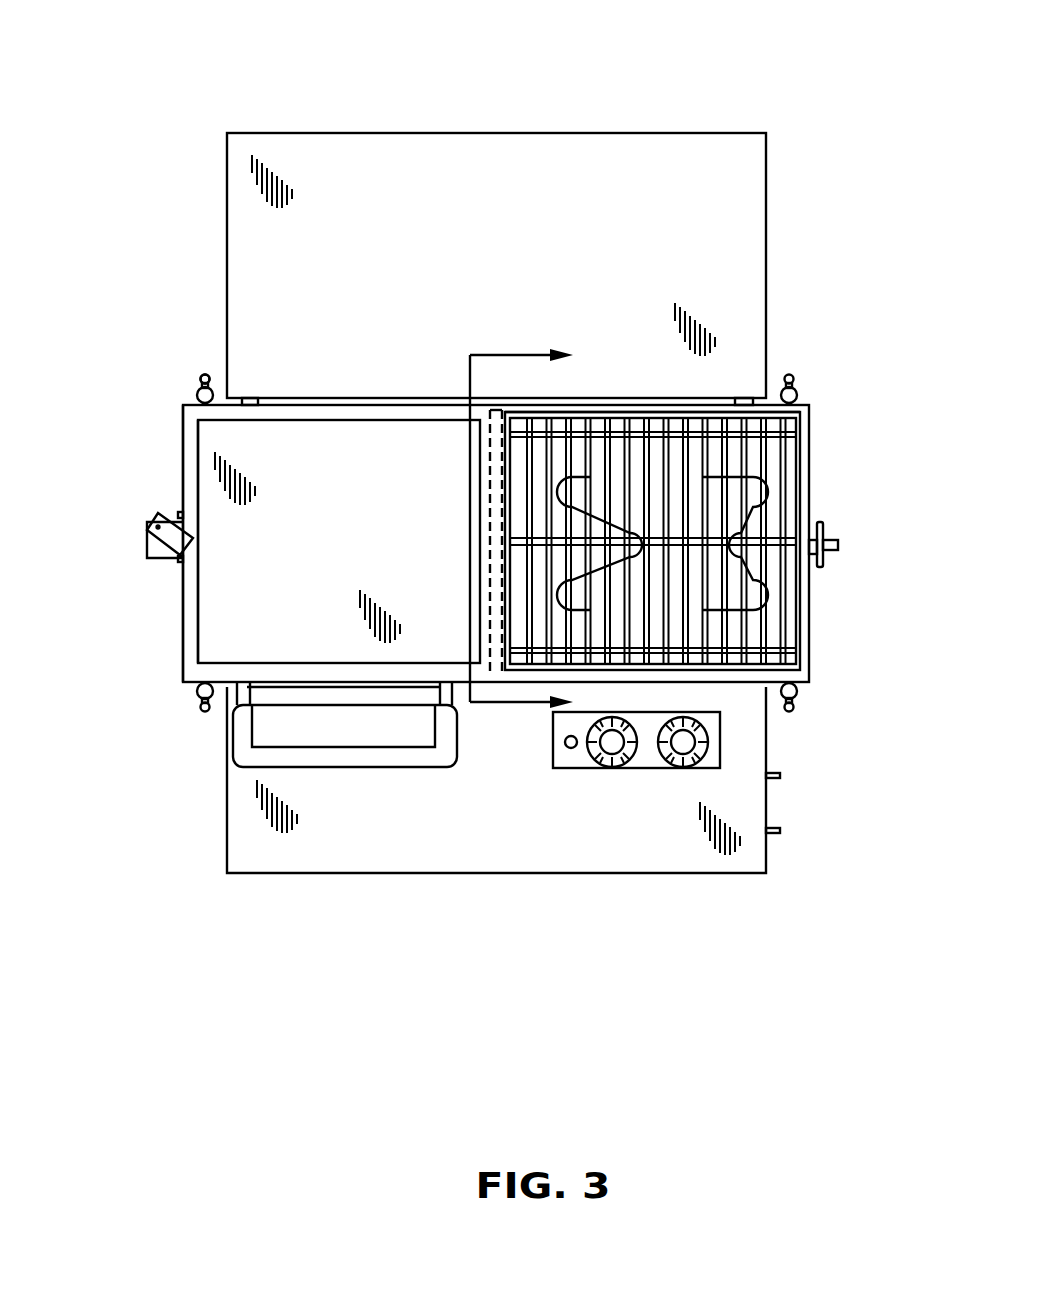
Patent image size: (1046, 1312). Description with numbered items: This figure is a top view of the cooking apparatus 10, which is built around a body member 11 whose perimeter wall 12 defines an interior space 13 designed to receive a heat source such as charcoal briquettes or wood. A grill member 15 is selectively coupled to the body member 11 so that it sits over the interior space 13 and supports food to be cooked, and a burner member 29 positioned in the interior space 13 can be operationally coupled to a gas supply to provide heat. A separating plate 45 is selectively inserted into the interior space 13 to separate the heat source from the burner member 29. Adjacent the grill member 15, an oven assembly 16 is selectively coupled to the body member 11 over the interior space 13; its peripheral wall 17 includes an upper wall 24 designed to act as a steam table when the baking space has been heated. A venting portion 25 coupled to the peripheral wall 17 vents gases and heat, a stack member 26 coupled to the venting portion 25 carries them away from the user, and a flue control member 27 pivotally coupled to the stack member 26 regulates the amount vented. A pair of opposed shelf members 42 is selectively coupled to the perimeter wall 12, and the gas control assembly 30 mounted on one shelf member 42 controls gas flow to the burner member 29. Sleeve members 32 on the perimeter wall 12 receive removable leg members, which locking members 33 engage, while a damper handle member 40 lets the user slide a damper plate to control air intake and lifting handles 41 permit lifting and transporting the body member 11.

The cooking apparatus 10 is at (521, 529).
The body member 11 is at (812, 405).
The perimeter wall 12 is at (806, 634).
The interior space 13 is at (738, 455).
The grill member 15 is at (780, 472).
The oven assembly 16 is at (160, 622).
The peripheral wall 17 is at (190, 413).
The upper wall 24 is at (210, 433).
The venting portion 25 is at (172, 558).
The stack member 26 is at (147, 563).
The flue control member 27 is at (147, 538).
The burner member 29 is at (731, 600).
The gas control assembly 30 is at (600, 786).
The sleeve members 32 is at (196, 388).
The locking members 33 is at (207, 365).
The damper handle member 40 is at (837, 548).
The lifting handles 41 is at (825, 525).
The shelf members 42 is at (707, 152).
The separating plate 45 is at (495, 580).